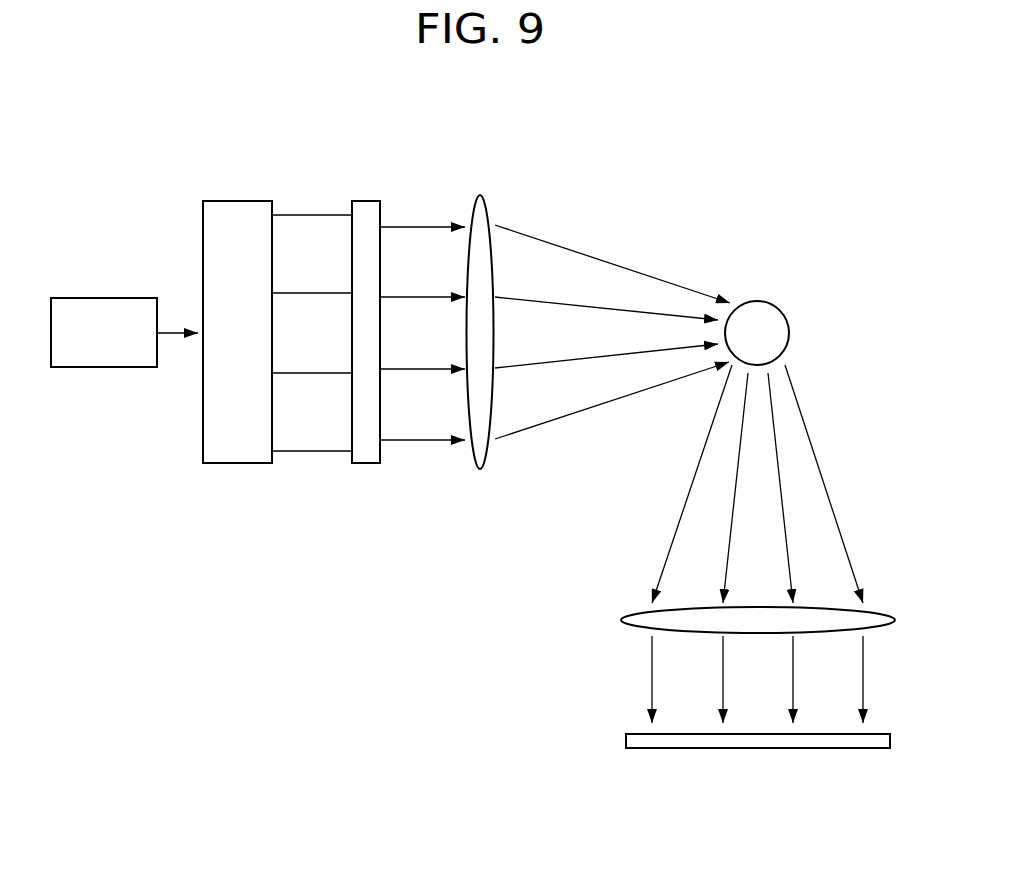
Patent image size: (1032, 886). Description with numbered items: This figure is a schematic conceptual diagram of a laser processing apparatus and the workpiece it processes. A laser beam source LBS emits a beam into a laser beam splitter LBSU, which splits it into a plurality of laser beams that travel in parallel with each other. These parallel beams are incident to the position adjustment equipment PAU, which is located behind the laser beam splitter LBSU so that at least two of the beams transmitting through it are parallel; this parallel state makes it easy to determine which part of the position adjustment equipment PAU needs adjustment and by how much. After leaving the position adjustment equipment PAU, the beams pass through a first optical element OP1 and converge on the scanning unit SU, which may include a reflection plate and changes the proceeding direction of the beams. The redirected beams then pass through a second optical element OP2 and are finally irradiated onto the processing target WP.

The laser beam source LBS is at (104, 298).
The laser beam splitter LBSU is at (238, 201).
The position adjustment equipment PAU is at (364, 201).
The first optical element OP1 is at (480, 195).
The scanning unit SU is at (783, 312).
The second optical element OP2 is at (621, 620).
The processing target WP is at (626, 742).